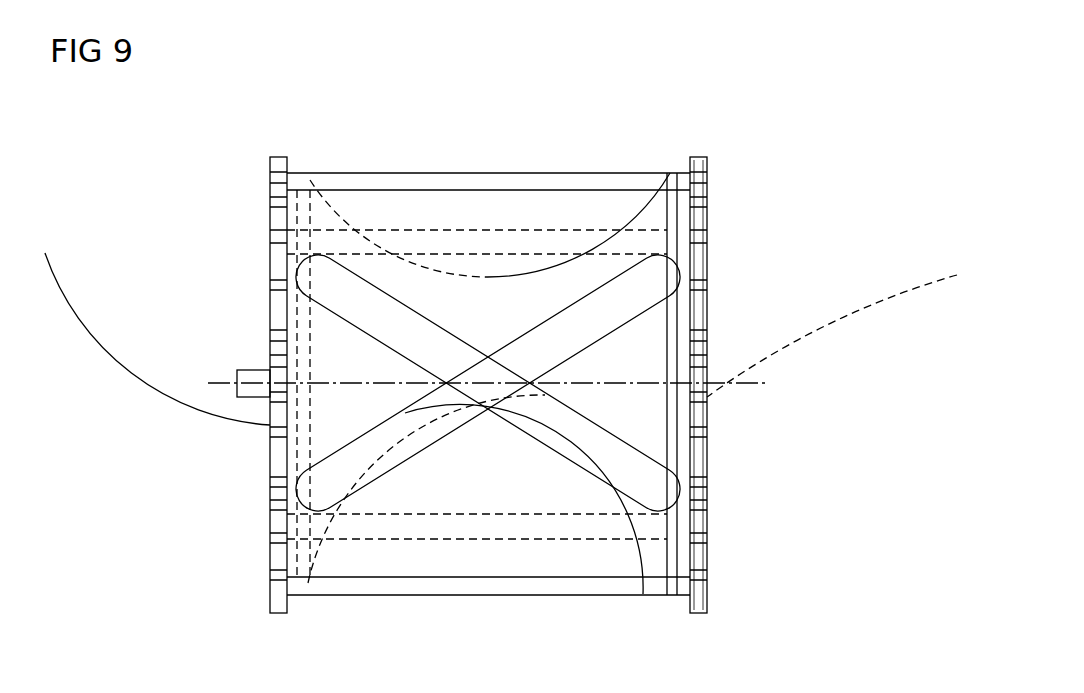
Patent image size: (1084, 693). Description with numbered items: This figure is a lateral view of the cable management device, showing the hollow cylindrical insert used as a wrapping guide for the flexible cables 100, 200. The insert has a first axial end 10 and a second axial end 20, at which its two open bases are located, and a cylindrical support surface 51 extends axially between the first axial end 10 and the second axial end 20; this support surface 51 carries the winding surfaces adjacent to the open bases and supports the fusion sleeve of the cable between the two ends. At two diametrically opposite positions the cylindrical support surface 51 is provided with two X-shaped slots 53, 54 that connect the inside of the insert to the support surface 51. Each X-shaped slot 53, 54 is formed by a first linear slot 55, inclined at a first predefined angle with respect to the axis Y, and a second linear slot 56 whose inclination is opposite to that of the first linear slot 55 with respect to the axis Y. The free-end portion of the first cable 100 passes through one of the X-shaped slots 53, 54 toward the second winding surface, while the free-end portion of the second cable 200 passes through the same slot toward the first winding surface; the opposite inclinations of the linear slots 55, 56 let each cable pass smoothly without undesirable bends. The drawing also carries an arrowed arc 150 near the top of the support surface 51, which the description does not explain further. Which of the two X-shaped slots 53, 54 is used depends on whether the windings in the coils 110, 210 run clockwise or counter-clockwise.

The first axial end 10 is at (270, 194).
The second axial end 20 is at (708, 181).
The cylindrical support surface 51 is at (440, 173).
The X-shaped slot 53 is at (759, 385).
The X-shaped slot 54 is at (690, 279).
The first linear slot 55 is at (642, 444).
The second linear slot 56 is at (421, 459).
The flexible cable 100 is at (94, 331).
The coil 110 is at (668, 173).
The rotation direction arc 150 is at (487, 278).
The flexible cable 200 is at (931, 299).
The coil 210 is at (303, 187).
The axis Y is at (741, 383).